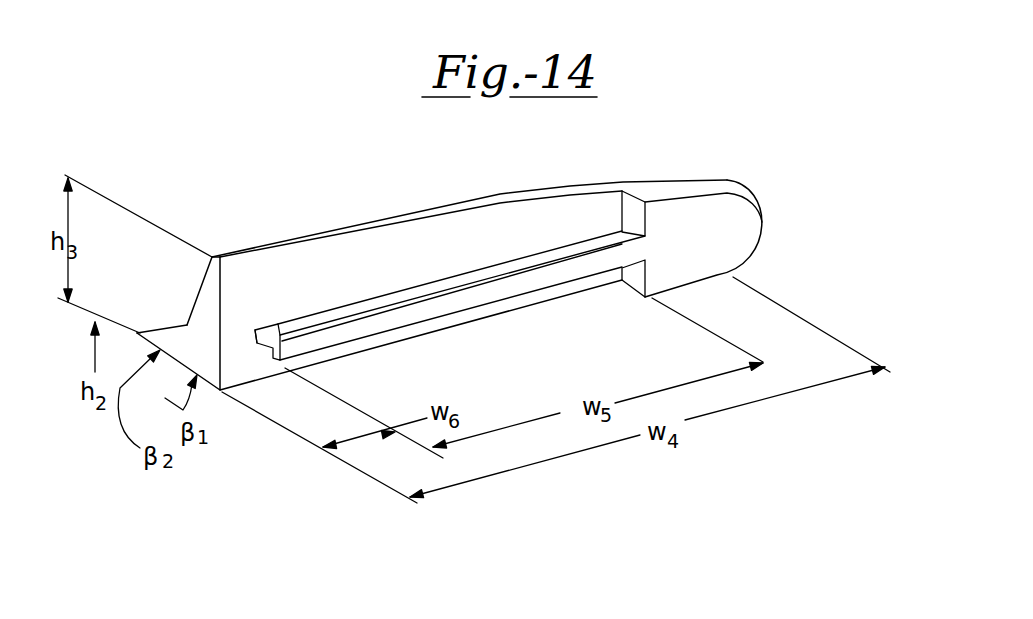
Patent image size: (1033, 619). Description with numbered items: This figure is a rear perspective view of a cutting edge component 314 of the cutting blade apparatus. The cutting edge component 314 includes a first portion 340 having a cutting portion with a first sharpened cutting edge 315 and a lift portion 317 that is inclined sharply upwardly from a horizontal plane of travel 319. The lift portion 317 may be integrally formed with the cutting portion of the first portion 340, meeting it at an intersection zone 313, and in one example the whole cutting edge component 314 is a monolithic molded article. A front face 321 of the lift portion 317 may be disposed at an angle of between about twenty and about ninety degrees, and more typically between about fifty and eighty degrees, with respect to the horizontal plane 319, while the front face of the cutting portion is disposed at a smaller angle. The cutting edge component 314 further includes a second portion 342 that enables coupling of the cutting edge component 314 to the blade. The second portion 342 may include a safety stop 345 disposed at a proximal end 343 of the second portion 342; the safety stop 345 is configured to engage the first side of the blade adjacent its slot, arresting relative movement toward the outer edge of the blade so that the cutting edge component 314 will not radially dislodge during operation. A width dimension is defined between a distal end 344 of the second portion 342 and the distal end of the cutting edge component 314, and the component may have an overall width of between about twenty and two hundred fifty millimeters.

The intersection zone 313 is at (185, 313).
The cutting edge component 314 is at (283, 212).
The first sharpened cutting edge 315 is at (158, 312).
The lift portion 317 is at (568, 177).
The horizontal plane of travel 319 is at (353, 467).
The front face 321 is at (395, 212).
The first portion 340 is at (193, 279).
The second portion 342 is at (268, 314).
The proximal end 343 is at (633, 233).
The distal end 344 is at (278, 330).
The safety stop 345 is at (637, 280).